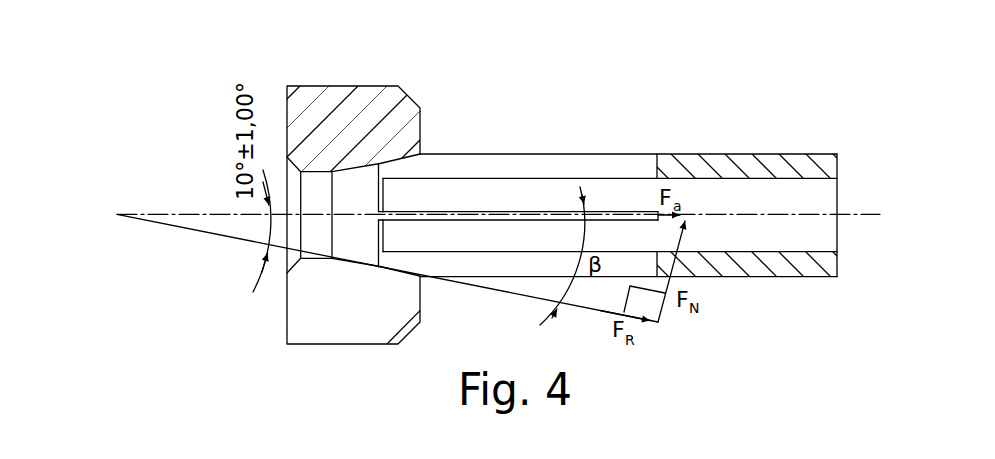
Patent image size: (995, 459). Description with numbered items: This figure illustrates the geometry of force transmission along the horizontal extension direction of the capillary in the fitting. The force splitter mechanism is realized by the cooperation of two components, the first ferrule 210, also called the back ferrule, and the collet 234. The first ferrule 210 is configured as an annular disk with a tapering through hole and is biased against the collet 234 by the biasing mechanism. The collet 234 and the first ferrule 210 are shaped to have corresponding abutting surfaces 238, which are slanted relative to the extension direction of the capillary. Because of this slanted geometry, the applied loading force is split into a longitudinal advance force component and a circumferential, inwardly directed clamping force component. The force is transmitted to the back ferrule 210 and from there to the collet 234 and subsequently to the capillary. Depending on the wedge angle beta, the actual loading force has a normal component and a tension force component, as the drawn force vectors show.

The first ferrule 210 is at (344, 78).
The abutting surfaces 238 is at (388, 161).
The collet 234 is at (749, 146).